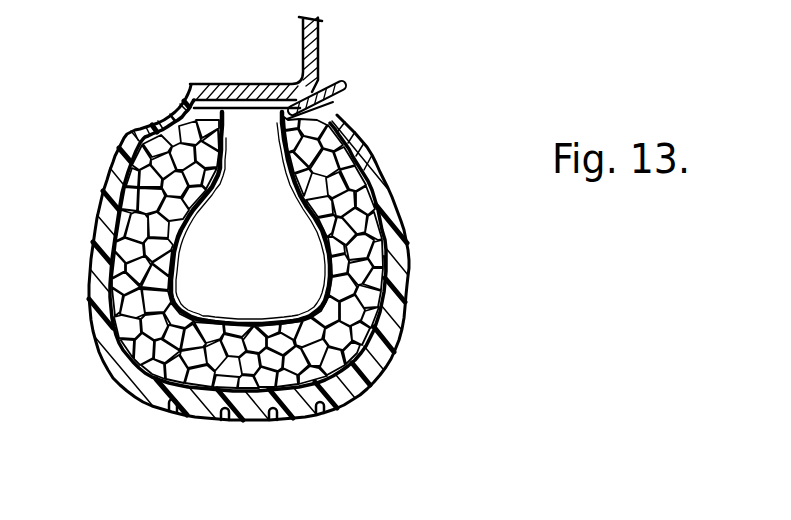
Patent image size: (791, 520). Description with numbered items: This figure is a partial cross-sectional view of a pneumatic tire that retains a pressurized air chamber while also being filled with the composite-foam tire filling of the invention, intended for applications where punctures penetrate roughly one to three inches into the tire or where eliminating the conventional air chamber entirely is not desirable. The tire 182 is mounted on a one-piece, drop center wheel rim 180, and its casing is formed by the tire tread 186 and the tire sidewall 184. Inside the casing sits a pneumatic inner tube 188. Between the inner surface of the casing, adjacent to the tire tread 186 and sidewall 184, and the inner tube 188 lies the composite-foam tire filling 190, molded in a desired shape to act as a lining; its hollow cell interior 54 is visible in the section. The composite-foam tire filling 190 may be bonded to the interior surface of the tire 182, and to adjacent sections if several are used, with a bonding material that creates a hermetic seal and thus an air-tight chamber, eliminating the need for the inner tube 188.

The drop center wheel rim 180 is at (266, 83).
The hollow cell interior 54 is at (172, 220).
The tire 182 is at (381, 370).
The tire sidewall 184 is at (88, 262).
The tire tread 186 is at (251, 421).
The pneumatic inner tube 188 is at (323, 247).
The composite-foam tire filling 190 is at (366, 266).